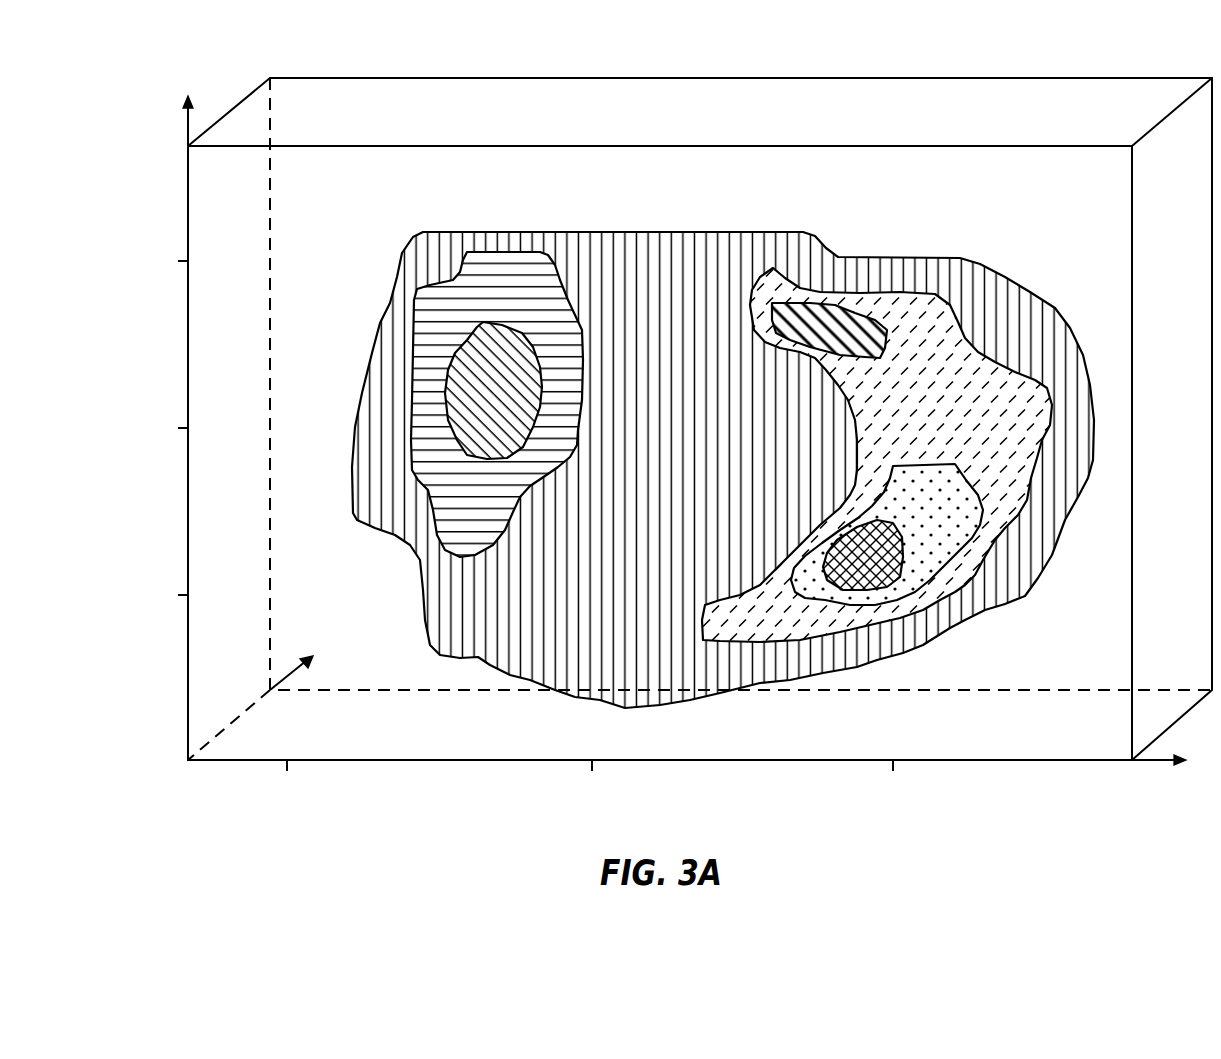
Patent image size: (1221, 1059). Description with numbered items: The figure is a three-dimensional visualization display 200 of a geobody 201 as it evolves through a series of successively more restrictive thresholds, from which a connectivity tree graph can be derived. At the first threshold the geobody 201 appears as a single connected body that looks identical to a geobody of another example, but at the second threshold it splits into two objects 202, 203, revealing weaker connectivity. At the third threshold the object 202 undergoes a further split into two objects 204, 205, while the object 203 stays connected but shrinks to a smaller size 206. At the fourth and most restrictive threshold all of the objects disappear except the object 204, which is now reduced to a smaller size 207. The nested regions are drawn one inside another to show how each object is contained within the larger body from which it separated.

The three-dimensional display volume 200 is at (376, 213).
The geobody 201 is at (723, 470).
The object 202 is at (877, 455).
The object 203 is at (497, 404).
The object 204 is at (887, 534).
The object 205 is at (829, 330).
The smaller size object 206 is at (493, 390).
The smaller size object 207 is at (863, 555).